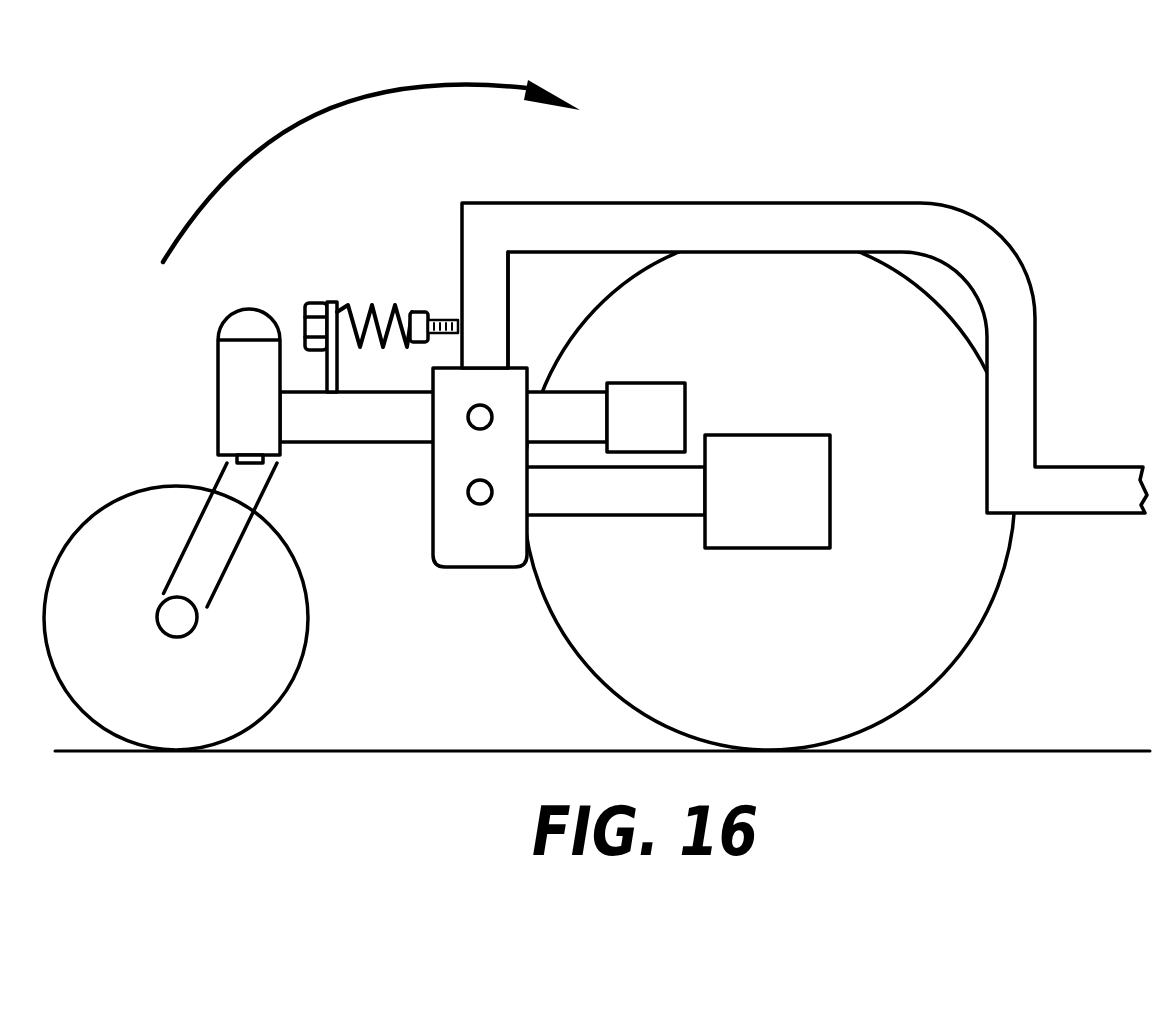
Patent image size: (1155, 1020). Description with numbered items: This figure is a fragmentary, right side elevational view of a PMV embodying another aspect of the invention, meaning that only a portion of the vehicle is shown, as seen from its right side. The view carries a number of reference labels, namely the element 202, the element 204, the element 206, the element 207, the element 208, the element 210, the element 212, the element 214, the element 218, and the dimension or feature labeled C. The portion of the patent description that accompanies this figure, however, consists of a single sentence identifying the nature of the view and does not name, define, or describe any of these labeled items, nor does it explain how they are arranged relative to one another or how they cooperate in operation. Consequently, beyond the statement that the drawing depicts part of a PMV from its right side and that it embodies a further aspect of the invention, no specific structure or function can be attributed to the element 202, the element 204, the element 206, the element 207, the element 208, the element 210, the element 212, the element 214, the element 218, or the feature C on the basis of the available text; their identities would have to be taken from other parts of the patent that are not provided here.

The caster wheel assembly 202 is at (690, 121).
The frame member 204 is at (977, 224).
The frame leg 206 is at (556, 301).
The wheel side surface 207 is at (718, 339).
The upper arm 208 is at (387, 433).
The lower arm 210 is at (650, 508).
The drive wheel 212 is at (958, 663).
The caster wheel 214 is at (300, 668).
The direction of rotation 218 is at (333, 103).
The clearance C is at (456, 320).